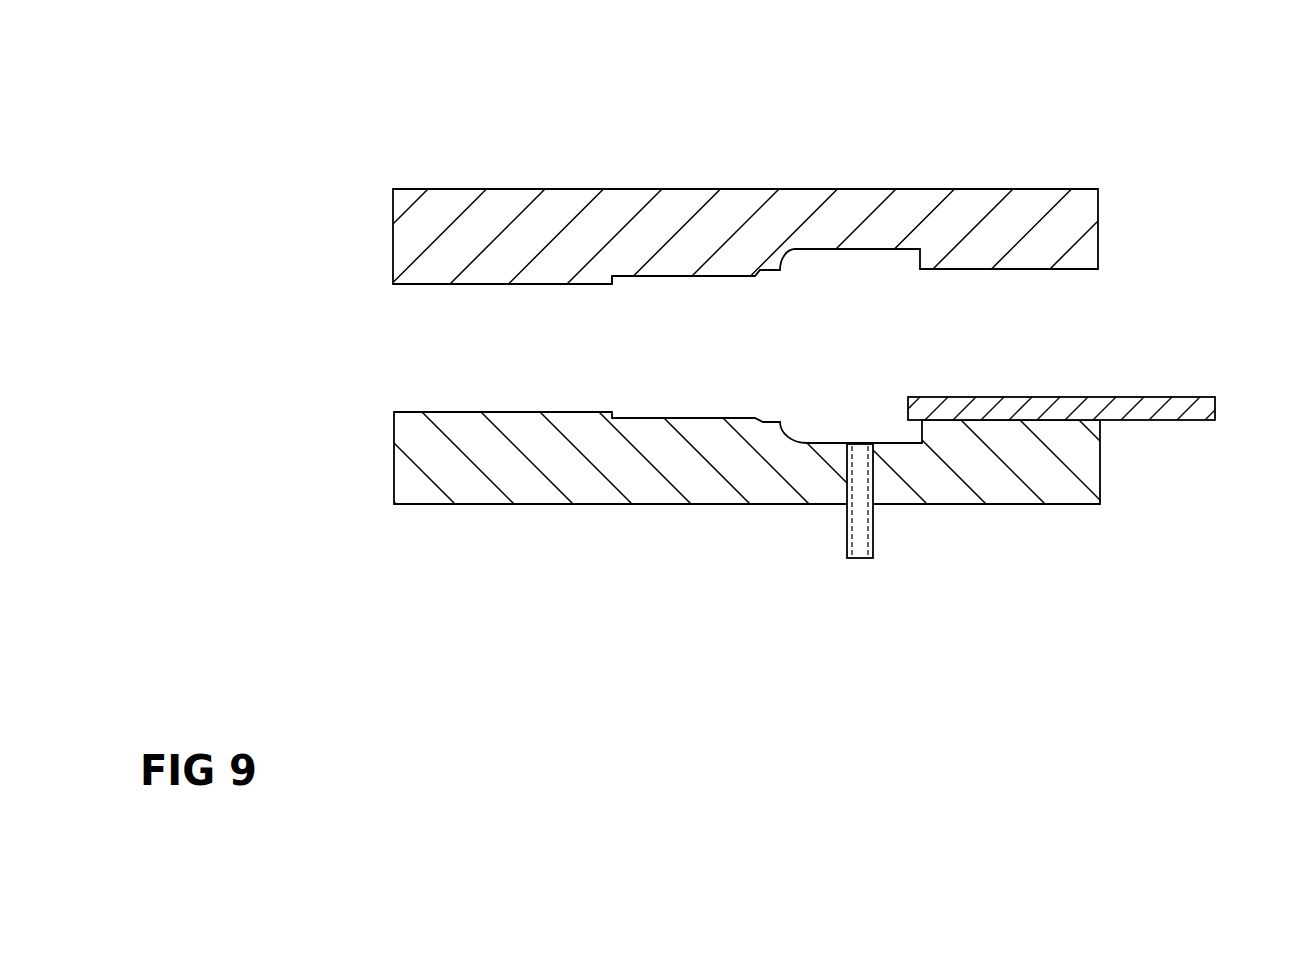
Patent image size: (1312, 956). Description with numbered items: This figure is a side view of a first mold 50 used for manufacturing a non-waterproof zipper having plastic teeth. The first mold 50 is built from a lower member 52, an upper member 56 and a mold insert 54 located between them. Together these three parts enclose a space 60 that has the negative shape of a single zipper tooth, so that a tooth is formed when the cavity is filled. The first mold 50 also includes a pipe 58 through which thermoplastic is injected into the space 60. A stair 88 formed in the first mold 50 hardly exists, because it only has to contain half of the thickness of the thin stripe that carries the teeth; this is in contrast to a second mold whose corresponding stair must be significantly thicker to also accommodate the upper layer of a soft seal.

The first mold 50 is at (337, 135).
The lower member 52 is at (395, 465).
The mold insert 54 is at (1217, 407).
The upper member 56 is at (980, 188).
The pipe 58 is at (875, 532).
The space 60 is at (857, 258).
The stair 88 is at (613, 280).